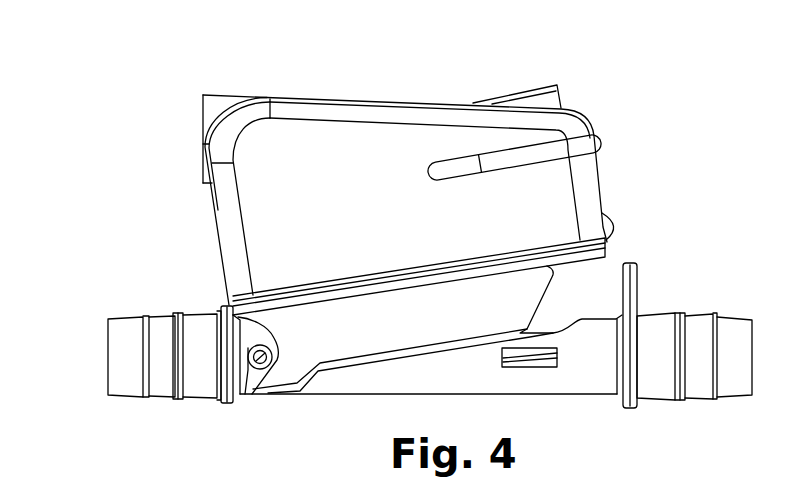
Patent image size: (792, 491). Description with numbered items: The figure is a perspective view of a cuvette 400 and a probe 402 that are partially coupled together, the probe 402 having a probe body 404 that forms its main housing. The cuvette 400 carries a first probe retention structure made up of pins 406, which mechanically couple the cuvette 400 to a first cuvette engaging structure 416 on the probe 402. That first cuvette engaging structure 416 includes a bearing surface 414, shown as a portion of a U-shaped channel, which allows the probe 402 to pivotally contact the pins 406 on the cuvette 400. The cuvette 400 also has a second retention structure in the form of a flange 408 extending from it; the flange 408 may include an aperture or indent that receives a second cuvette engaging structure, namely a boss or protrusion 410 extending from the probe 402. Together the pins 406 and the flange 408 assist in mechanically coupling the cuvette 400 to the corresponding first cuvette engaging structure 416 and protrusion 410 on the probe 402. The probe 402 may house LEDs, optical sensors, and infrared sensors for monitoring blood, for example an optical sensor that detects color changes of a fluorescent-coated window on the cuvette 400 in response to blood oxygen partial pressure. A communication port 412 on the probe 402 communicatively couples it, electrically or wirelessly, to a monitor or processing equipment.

The cuvette 400 is at (157, 337).
The probe 402 is at (139, 100).
The probe body 404 is at (413, 128).
The pins 406 is at (250, 386).
The flange 408 is at (631, 277).
The boss or protrusion 410 is at (615, 221).
The communication port 412 is at (203, 127).
The bearing surface 414 is at (240, 340).
The first cuvette engaging structure 416 is at (271, 374).